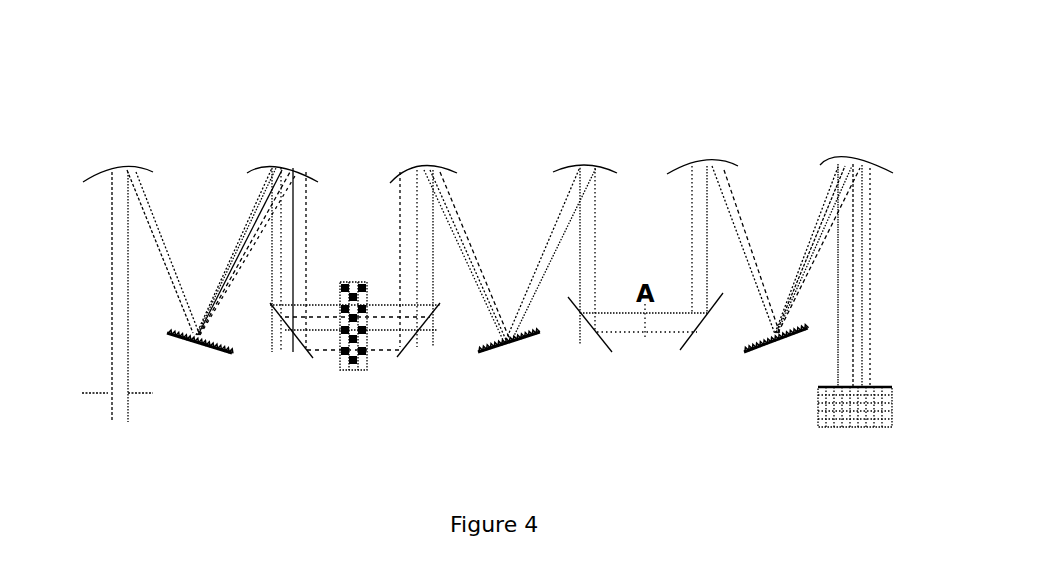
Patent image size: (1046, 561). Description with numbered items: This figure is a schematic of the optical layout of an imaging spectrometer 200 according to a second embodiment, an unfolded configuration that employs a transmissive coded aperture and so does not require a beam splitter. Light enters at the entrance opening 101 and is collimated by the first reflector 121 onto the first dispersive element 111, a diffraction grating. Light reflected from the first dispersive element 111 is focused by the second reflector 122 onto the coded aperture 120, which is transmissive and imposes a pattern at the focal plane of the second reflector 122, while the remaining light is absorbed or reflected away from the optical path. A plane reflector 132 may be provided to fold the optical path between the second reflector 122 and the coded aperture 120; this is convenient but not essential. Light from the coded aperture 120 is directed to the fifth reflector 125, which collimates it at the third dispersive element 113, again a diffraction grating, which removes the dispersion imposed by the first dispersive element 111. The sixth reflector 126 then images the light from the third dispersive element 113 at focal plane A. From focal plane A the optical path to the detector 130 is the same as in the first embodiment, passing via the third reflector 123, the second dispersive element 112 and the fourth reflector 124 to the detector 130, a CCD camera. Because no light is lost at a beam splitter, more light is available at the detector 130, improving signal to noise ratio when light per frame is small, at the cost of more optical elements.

The imaging spectrometer (second embodiment) 200 is at (691, 78).
The entrance opening 101 is at (146, 395).
The first reflector 121 is at (117, 165).
The second reflector 122 is at (287, 167).
The third reflector 123 is at (432, 166).
The fifth reflector 125 is at (623, 182).
The sixth reflector 126 is at (717, 145).
The fourth reflector 124 is at (850, 160).
The first dispersive element 111 is at (195, 332).
The third dispersive element 113 is at (509, 338).
The second dispersive element 112 is at (772, 333).
The coded aperture 120 is at (353, 280).
The plane reflector 132 is at (285, 313).
The detector 130 is at (819, 408).